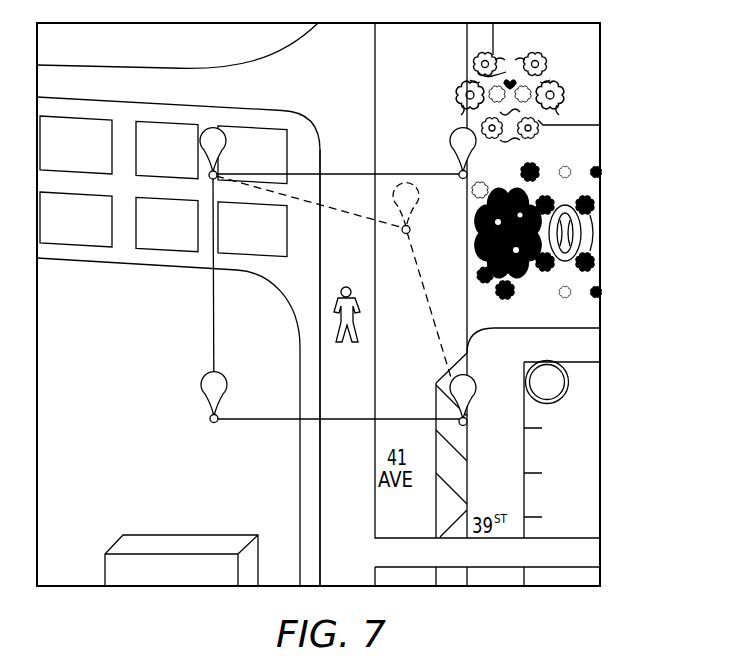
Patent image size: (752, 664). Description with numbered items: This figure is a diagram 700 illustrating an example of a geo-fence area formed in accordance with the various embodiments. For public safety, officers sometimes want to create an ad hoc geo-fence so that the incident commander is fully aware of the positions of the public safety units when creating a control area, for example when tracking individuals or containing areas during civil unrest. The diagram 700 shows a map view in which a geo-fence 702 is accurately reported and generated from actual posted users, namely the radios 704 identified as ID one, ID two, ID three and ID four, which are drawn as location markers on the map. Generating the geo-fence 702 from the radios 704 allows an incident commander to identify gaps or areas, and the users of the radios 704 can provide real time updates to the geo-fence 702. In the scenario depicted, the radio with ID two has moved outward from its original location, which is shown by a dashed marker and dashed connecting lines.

The diagram 700 is at (600, 52).
The geo-fence 702 is at (340, 171).
The radios 704 is at (213, 127).